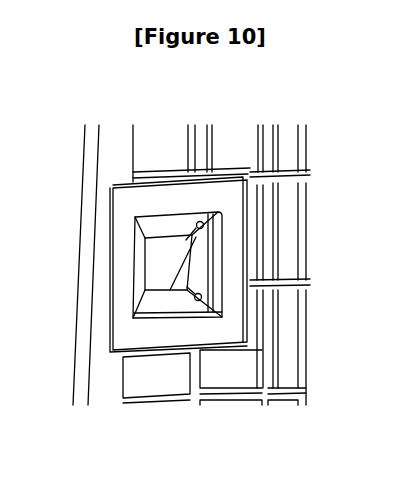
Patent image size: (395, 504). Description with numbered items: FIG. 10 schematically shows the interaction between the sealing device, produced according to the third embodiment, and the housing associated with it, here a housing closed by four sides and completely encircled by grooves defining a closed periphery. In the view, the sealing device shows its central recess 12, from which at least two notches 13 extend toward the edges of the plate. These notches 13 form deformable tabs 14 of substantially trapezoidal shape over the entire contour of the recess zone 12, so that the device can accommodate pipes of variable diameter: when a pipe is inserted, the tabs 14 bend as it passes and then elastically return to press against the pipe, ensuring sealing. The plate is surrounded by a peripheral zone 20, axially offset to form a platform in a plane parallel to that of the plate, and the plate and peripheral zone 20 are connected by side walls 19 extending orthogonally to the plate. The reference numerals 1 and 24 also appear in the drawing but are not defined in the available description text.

The frame 1 is at (270, 358).
The central recess 12 is at (165, 256).
The notch 13 is at (204, 226).
The deformable tab 14 is at (113, 188).
The side wall 19 is at (200, 301).
The peripheral zone 20 is at (122, 315).
The direction arrow 24 is at (72, 389).